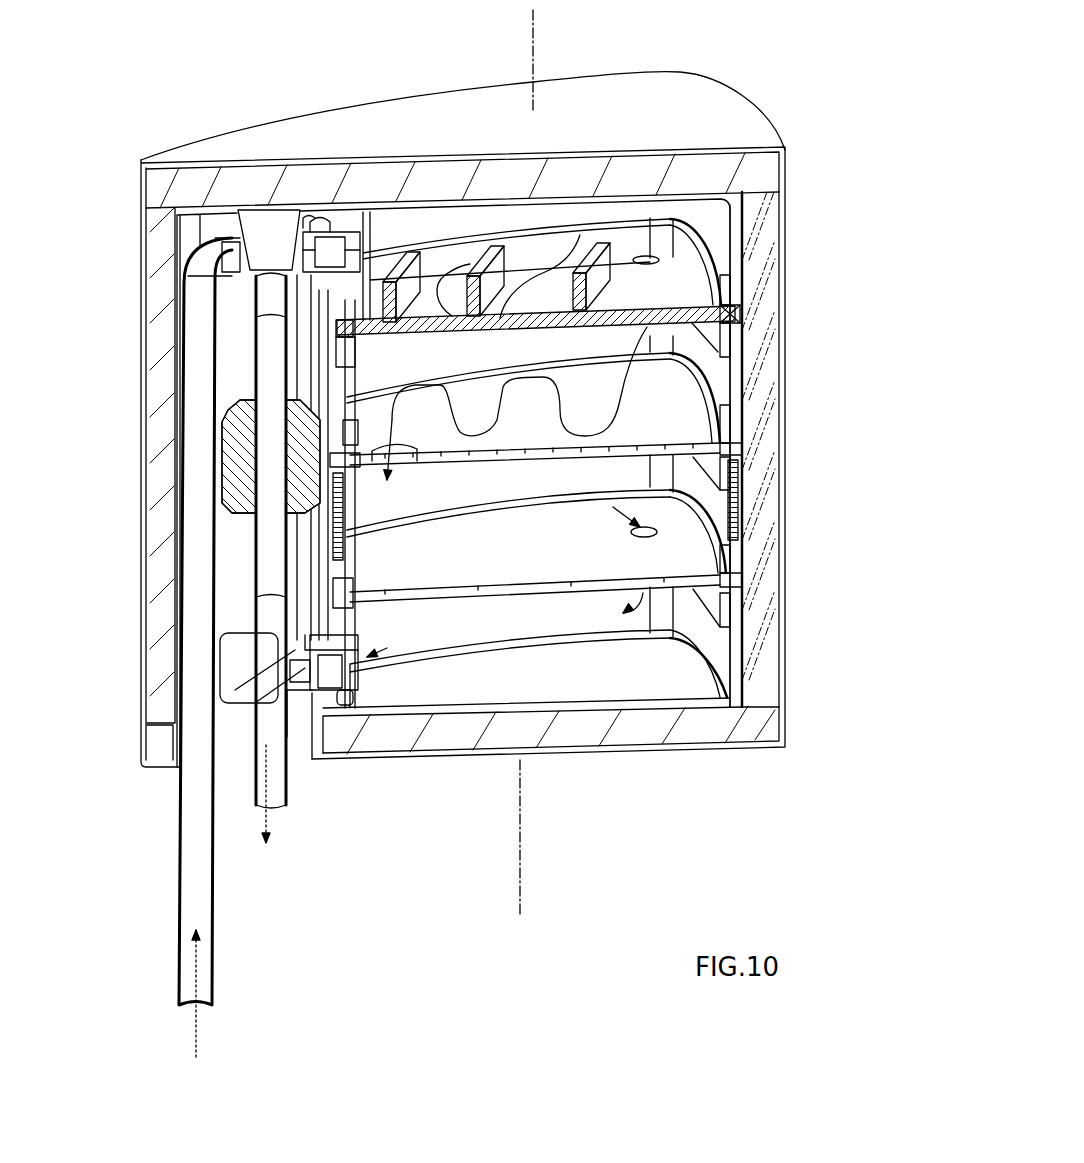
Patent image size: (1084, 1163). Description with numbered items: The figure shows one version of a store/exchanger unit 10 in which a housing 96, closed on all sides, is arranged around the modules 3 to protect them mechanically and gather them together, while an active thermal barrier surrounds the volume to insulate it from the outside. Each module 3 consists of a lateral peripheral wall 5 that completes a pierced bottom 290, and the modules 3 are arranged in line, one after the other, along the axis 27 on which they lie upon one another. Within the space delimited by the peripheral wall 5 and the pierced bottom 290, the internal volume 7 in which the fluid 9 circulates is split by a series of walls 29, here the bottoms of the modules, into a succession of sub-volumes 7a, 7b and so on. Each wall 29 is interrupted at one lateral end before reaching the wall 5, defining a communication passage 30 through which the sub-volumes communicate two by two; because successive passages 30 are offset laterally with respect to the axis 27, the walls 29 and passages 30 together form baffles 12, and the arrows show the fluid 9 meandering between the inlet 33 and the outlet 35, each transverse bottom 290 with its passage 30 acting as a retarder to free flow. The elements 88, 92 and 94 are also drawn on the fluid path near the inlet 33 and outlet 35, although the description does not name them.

The unit 10 is at (815, 188).
The housing 96 is at (593, 105).
The inner liner channel 88 is at (193, 232).
The distributor block 92 is at (280, 267).
The communication passage 30 is at (332, 248).
The inlet 33 is at (188, 870).
The outlet 35 is at (277, 763).
The pipe junction 94 is at (232, 667).
The fluid 9 is at (392, 252).
The axis 27 is at (522, 835).
The module 3 is at (727, 297).
The bottom 290 is at (580, 455).
The internal volume 7 is at (555, 245).
The sub-volume 7a is at (371, 258).
The sub-volume 7b is at (474, 262).
The baffles 12 is at (440, 270).
The walls 29 is at (417, 313).
The lateral peripheral wall 5 is at (698, 518).